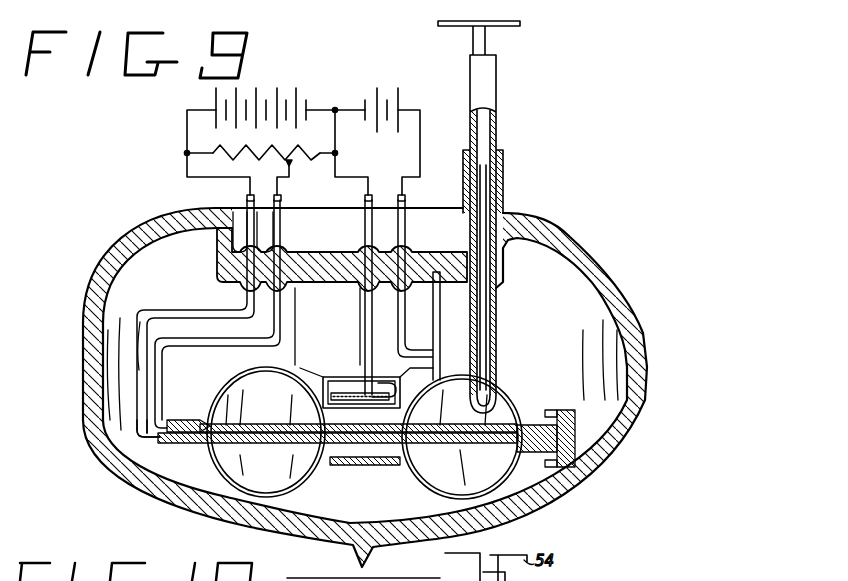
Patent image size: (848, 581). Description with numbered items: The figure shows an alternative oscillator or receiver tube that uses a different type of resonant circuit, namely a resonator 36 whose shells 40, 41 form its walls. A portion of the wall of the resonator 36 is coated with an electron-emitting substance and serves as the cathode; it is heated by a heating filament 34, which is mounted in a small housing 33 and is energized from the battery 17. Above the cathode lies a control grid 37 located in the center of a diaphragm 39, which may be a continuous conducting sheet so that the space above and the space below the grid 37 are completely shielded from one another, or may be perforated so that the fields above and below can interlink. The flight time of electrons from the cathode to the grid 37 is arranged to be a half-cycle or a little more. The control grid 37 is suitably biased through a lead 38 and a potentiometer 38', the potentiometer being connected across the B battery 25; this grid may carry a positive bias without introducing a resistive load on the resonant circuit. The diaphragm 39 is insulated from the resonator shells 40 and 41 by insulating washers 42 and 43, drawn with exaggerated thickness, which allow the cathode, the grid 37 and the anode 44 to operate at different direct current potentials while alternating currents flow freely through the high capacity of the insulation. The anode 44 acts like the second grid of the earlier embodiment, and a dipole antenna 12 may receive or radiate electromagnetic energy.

The dipole antenna 12 is at (510, 28).
The battery 25 is at (277, 88).
The battery 17 is at (380, 90).
The potentiometer 38' is at (266, 147).
The lead 38 is at (288, 312).
The resonator shell 40 is at (228, 376).
The resonator shell 41 is at (222, 472).
The insulating washer 42 is at (170, 422).
The insulating washer 43 is at (168, 448).
The diaphragm 39 is at (278, 424).
The heater box 33 is at (347, 408).
The heating filament 34 is at (388, 408).
The control grid 37 is at (343, 440).
The anode 44 is at (405, 462).
The resonator 36 is at (472, 478).